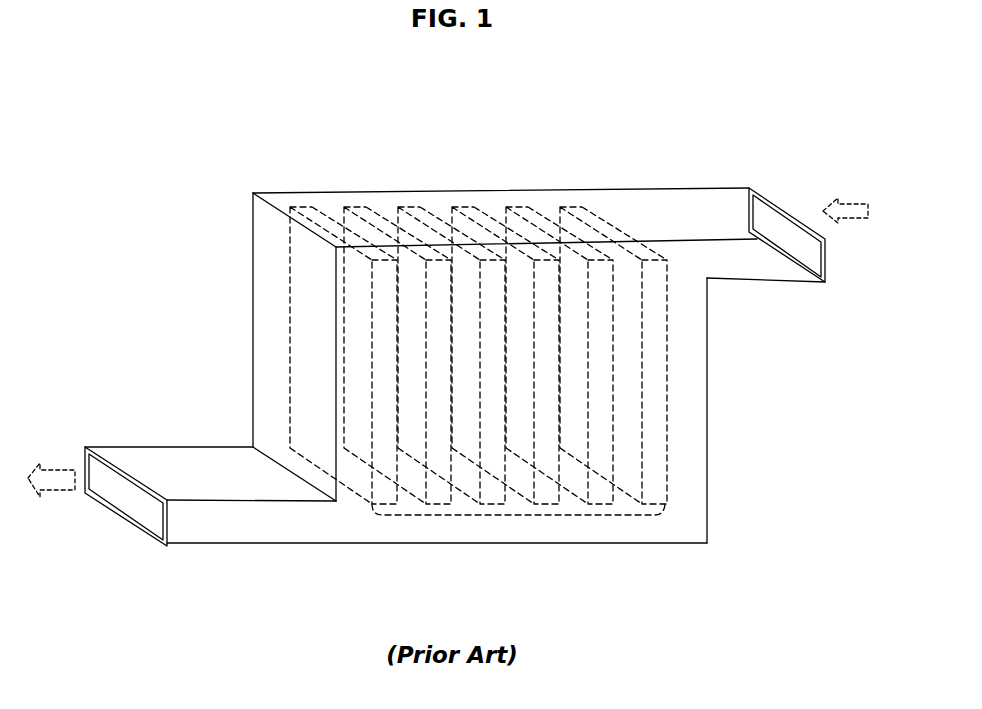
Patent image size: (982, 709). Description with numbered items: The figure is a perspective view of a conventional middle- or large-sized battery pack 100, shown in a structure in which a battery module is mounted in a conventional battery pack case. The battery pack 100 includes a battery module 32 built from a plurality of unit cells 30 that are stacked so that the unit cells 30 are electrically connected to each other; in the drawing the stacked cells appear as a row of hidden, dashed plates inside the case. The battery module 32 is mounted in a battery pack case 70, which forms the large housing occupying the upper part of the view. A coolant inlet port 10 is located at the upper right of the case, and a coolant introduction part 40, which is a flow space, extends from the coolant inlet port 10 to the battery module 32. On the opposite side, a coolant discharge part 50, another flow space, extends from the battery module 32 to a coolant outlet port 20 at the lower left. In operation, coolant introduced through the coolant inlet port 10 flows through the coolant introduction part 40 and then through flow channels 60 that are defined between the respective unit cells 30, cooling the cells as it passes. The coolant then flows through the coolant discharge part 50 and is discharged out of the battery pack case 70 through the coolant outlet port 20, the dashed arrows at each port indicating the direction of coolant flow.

The middle- or large-sized battery pack 100 is at (110, 95).
The coolant inlet port 10 is at (763, 212).
The coolant outlet port 20 is at (122, 500).
The unit cells 30 is at (660, 413).
The battery module 32 is at (527, 509).
The coolant introduction part 40 is at (686, 252).
The coolant discharge part 50 is at (391, 526).
The flow channels 60 is at (618, 265).
The battery pack case 70 is at (387, 181).